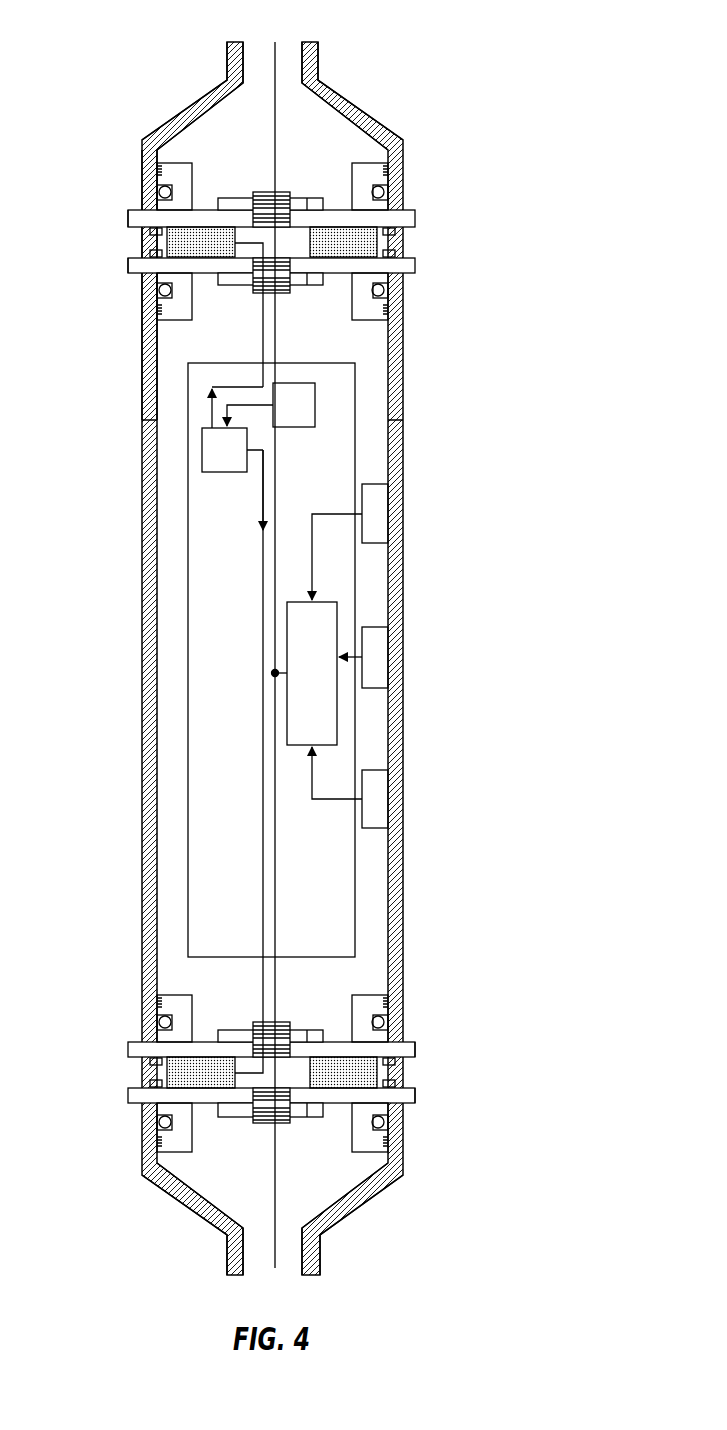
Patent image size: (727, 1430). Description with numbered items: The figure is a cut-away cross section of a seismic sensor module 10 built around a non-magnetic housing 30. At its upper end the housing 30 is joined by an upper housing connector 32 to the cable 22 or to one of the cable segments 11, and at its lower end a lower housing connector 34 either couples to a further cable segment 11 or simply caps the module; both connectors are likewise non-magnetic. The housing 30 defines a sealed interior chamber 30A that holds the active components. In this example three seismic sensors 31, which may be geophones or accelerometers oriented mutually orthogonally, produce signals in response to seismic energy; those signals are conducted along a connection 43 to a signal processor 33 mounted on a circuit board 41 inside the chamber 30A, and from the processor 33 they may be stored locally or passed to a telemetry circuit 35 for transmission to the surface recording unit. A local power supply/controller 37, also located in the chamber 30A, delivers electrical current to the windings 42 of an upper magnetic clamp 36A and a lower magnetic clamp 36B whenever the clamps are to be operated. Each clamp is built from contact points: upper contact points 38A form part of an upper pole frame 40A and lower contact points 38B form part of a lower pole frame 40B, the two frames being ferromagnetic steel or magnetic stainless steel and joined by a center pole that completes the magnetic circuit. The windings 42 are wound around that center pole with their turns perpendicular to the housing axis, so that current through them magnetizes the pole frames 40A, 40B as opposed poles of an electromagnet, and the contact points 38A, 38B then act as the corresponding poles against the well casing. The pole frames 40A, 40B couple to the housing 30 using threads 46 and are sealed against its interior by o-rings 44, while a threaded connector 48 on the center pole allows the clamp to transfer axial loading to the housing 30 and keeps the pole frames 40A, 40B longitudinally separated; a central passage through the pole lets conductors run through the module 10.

The sensor module 10 is at (494, 50).
The cable segment 11 is at (230, 636).
The cable 22 is at (274, 65).
The housing 30 is at (400, 462).
The sealed interior chamber 30A is at (400, 337).
The seismic sensor 31 is at (375, 514).
The upper housing connector 32 is at (358, 108).
The signal processor 33 is at (315, 723).
The lower housing connector 34 is at (365, 1207).
The telemetry circuit 35 is at (293, 405).
The upper magnetic clamp 36A is at (128, 268).
The lower magnetic clamp 36B is at (415, 1048).
The local power supply/controller 37 is at (215, 450).
The upper contact points 38A is at (415, 218).
The lower contact points 38B is at (415, 265).
The upper pole frame 40A is at (365, 163).
The lower pole frame 40B is at (188, 320).
The circuit board 41 is at (215, 793).
The windings 42 is at (193, 233).
The signal line 43 is at (315, 565).
The o-rings 44 is at (158, 195).
The threads 46 is at (160, 168).
The threaded connector 48 is at (265, 195).